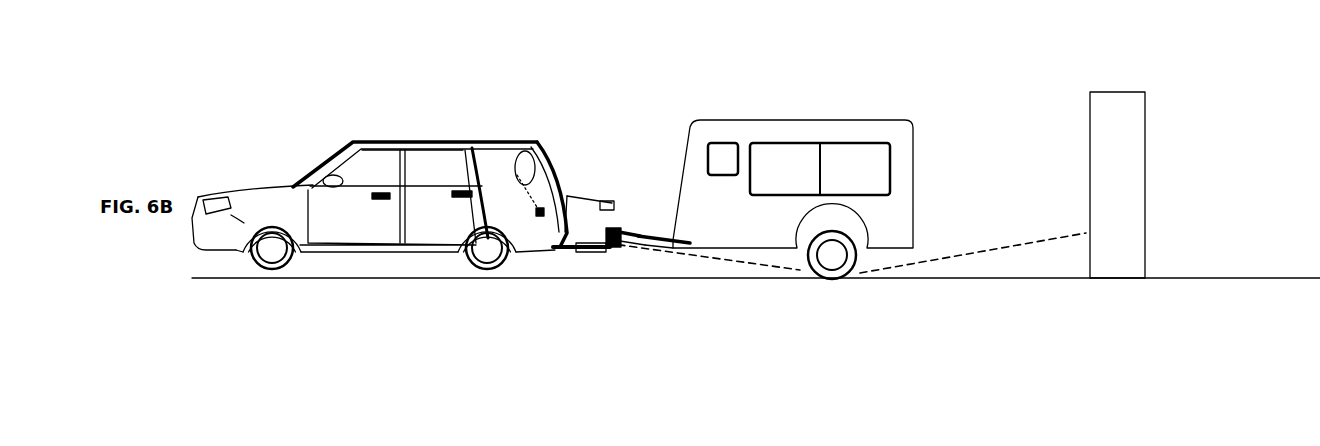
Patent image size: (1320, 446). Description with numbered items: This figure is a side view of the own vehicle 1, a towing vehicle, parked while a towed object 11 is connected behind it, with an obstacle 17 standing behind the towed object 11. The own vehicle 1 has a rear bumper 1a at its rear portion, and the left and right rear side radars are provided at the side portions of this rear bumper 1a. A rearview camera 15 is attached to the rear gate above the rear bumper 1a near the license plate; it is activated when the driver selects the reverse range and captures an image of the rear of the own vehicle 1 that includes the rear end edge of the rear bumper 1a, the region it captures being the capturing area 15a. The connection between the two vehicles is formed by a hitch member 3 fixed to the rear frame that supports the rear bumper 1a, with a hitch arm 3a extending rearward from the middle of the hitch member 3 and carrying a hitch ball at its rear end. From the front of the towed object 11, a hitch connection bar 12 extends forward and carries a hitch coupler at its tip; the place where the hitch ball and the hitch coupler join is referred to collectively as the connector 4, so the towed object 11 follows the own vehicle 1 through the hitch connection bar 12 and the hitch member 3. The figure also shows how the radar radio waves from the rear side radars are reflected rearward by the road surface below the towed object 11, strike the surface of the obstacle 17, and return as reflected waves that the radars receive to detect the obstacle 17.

The own vehicle 1 is at (485, 124).
The rear bumper 1a is at (546, 250).
The hitch member 3 is at (572, 258).
The hitch arm 3a is at (604, 249).
The connector 4 is at (627, 244).
The towed object 11 is at (839, 110).
The hitch connection bar 12 is at (652, 226).
The rearview camera 15 is at (578, 195).
The capturing area 15a is at (606, 190).
The obstacle 17 is at (1146, 130).